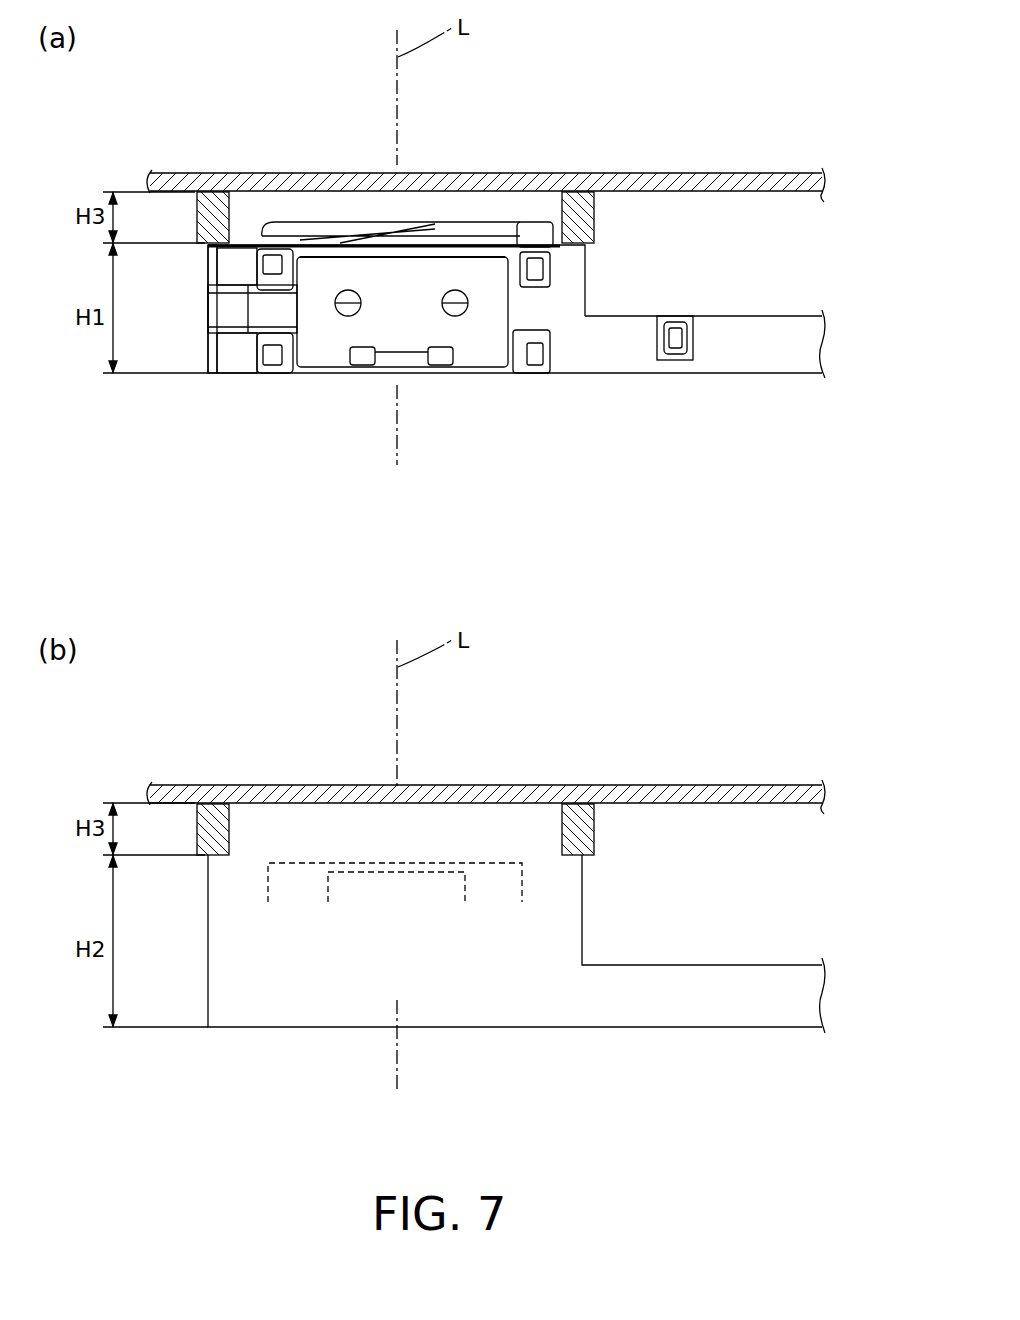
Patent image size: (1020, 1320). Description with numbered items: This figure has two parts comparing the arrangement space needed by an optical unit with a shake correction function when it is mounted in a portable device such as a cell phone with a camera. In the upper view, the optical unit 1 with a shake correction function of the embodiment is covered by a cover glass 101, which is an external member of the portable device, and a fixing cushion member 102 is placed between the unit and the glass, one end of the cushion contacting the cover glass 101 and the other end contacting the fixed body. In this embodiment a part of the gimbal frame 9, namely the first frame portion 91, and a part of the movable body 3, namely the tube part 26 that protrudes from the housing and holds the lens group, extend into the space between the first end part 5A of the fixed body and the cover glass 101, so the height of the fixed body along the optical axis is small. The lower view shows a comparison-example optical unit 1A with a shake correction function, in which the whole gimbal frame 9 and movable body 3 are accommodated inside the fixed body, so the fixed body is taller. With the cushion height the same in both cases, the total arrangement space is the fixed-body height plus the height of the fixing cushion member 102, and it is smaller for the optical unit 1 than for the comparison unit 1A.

The cover glass 101 is at (720, 172).
The fixing cushion member 102 is at (197, 230).
The first end part 5A is at (240, 237).
The tube part 26 is at (307, 238).
The first frame portion 91 is at (540, 237).
The optical unit with a shake correction function 1 is at (700, 308).
The optical unit with a shake correction function 1A is at (700, 958).
The movable body 3 is at (413, 870).
The gimbal frame 9 is at (460, 870).